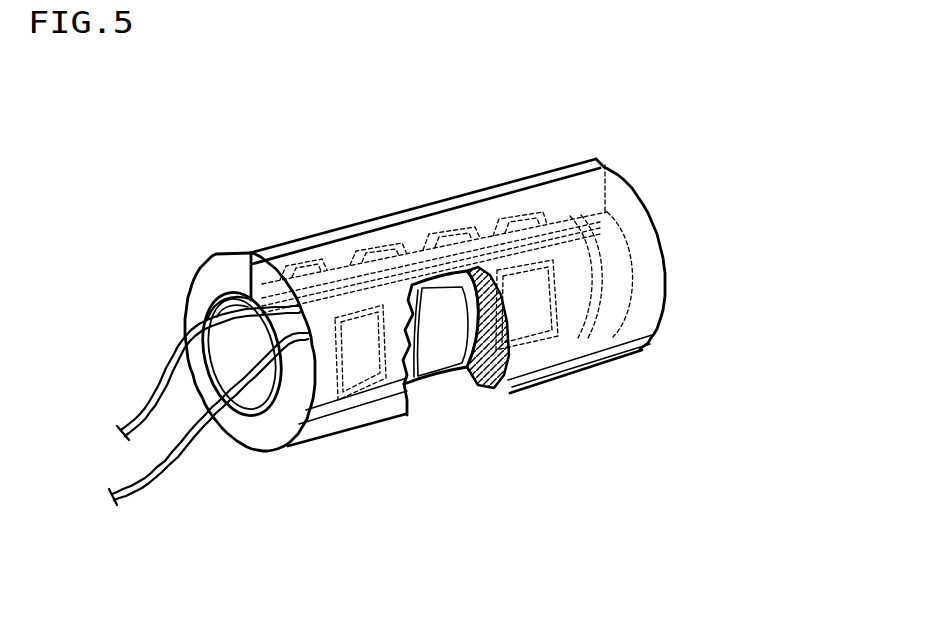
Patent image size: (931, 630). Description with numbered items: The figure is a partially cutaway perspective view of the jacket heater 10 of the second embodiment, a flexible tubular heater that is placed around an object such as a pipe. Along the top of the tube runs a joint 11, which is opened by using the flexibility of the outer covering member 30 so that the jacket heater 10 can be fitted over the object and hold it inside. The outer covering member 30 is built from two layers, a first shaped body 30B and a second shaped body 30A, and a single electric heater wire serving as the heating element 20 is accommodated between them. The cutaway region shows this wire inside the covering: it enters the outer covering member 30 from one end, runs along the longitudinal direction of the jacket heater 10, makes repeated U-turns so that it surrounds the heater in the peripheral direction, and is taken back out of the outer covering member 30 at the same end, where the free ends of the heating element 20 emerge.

The jacket heater 10 is at (453, 153).
The joint 11 is at (608, 148).
The heating element 20 is at (143, 410).
The outer covering member 30 is at (295, 331).
The second shaped body 30A is at (210, 282).
The first shaped body 30B is at (213, 297).